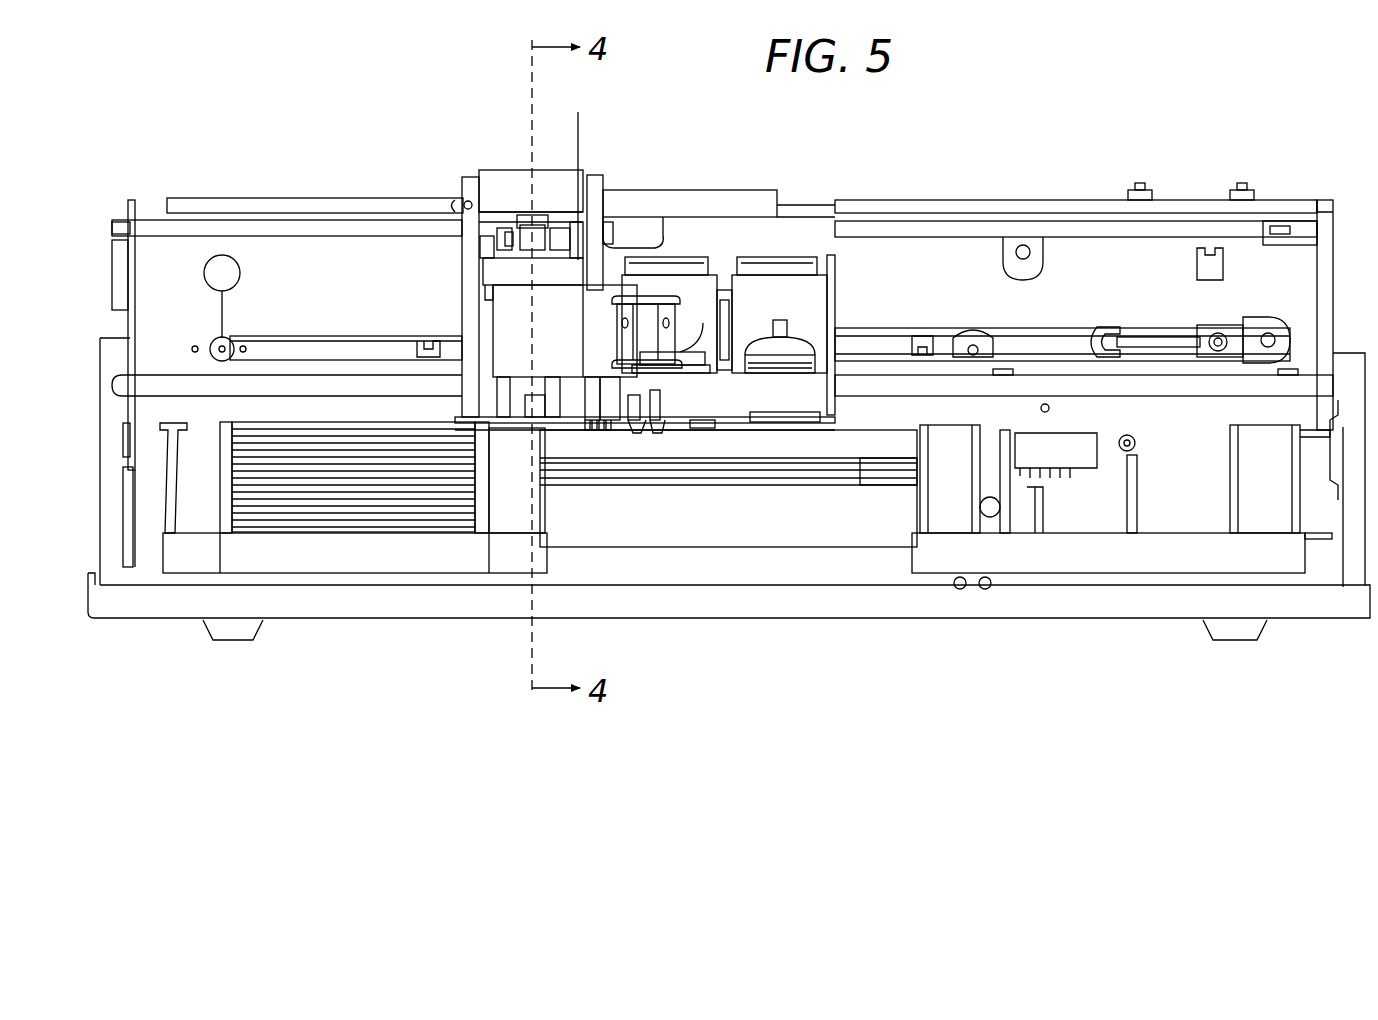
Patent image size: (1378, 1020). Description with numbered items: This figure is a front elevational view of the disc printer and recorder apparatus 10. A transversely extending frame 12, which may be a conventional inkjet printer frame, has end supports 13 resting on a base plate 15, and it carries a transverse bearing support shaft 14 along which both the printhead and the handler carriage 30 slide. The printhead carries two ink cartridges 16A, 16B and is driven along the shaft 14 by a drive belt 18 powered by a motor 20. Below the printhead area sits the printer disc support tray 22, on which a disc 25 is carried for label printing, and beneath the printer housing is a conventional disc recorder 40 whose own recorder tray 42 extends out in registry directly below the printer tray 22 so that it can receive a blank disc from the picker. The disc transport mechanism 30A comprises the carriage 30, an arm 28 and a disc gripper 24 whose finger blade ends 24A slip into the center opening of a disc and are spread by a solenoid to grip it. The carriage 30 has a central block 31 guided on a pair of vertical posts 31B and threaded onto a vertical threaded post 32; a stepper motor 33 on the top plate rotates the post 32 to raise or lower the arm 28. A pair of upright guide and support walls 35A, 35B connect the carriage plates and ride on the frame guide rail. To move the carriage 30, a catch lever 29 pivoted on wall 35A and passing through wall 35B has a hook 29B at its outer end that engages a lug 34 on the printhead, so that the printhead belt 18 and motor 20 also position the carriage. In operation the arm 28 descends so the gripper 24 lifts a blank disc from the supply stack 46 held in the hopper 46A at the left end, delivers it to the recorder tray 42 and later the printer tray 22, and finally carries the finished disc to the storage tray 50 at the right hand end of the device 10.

The disc printer and recorder apparatus 10 is at (957, 178).
The frame 12 is at (1120, 250).
The end supports 13 is at (132, 262).
The bearing support shaft 14 is at (1230, 384).
The base plate 15 is at (1013, 620).
The ink cartridge 16A is at (810, 292).
The ink cartridge 16B is at (690, 297).
The drive belt 18 is at (1030, 325).
The motor 20 is at (242, 263).
The disc support tray 22 is at (603, 447).
The disc gripper 24 is at (612, 337).
The gripper blade ends 24A is at (630, 436).
The disc 25 is at (693, 427).
The arm 28 is at (563, 365).
The catch lever 29 is at (660, 203).
The hook 29B is at (675, 218).
The carriage 30 is at (470, 322).
The disc transport mechanism 30A is at (470, 276).
The central block 31 is at (458, 185).
The vertical posts 31B is at (360, 305).
The threaded post 32 is at (540, 220).
The stepper motor 33 is at (508, 185).
The lug 34 is at (637, 220).
The guide and support wall 35A is at (470, 247).
The guide and support wall 35B is at (598, 185).
The disc recorder 40 is at (806, 540).
The recorder disc support tray 42 is at (882, 484).
The supply stack 46 is at (378, 526).
The storage tray or hopper 46A is at (340, 560).
The storage tray 50 is at (1097, 546).